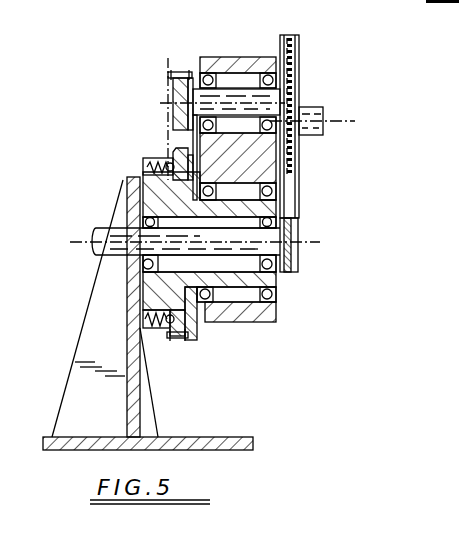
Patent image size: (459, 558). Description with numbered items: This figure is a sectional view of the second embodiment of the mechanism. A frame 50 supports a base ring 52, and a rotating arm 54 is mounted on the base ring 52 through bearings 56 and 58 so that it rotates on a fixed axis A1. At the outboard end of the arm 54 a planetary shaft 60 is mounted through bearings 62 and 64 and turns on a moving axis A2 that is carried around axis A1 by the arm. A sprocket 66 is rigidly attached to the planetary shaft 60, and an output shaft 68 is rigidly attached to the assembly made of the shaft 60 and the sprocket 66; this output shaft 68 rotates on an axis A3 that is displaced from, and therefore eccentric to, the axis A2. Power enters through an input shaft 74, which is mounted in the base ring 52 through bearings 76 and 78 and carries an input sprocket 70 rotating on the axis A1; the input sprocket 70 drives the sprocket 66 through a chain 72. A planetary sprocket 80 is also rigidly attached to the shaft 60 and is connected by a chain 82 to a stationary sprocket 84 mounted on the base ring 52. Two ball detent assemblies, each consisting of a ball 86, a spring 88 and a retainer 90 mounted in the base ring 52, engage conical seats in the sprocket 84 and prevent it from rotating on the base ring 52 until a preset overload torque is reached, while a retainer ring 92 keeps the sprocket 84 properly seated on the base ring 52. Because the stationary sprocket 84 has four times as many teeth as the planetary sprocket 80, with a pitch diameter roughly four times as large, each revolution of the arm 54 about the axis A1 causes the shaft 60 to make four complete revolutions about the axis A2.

The frame 50 is at (157, 428).
The base ring 52 is at (276, 280).
The rotating arm 54 is at (240, 323).
The bearing 56 is at (208, 323).
The bearing 58 is at (275, 302).
The planetary shaft 60 is at (197, 93).
The bearing 62 is at (207, 77).
The bearing 64 is at (267, 77).
The sprocket 66 is at (300, 57).
The output shaft 68 is at (320, 112).
The input sprocket 70 is at (298, 230).
The chain 72 is at (296, 186).
The input shaft 74 is at (100, 233).
The bearing 76 is at (142, 267).
The bearing 78 is at (275, 275).
The planetary sprocket 80 is at (167, 76).
The chain 82 is at (172, 128).
The stationary sprocket 84 is at (172, 157).
The ball 86 is at (162, 343).
The spring 88 is at (143, 326).
The retainer 90 is at (148, 313).
The retainer ring 92 is at (197, 340).
The fixed axis A1 is at (310, 245).
The moving axis A2 is at (170, 100).
The output shaft axis A3 is at (343, 122).